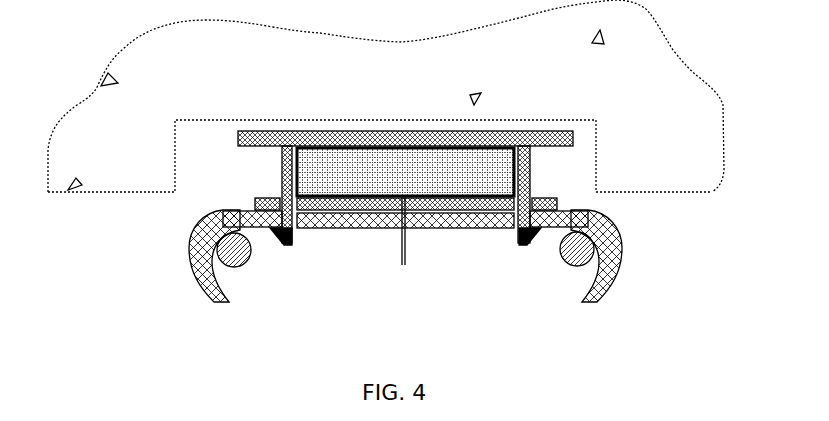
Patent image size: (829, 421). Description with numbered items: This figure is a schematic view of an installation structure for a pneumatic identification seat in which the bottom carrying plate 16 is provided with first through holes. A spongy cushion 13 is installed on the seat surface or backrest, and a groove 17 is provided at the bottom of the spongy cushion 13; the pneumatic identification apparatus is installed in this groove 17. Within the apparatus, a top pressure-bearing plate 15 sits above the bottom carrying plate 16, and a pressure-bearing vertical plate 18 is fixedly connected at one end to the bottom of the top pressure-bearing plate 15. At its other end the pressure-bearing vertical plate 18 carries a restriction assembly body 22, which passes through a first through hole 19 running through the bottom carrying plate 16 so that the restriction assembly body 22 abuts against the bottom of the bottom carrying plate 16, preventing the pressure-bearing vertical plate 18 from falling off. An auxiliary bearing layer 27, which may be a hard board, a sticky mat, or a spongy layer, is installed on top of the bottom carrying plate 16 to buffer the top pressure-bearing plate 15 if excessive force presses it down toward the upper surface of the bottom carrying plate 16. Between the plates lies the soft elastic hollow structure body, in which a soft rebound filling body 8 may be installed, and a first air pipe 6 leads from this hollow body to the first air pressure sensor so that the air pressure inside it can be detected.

The spongy cushion 13 is at (653, 83).
The groove 17 is at (190, 145).
The top pressure-bearing plate 15 is at (343, 132).
The soft rebound filling body 8 is at (410, 165).
The pressure-bearing vertical plate 18 is at (527, 190).
The first through hole 19 is at (513, 215).
The bottom carrying plate 16 is at (365, 225).
The auxiliary bearing layer 27 is at (268, 200).
The restriction assembly body 22 is at (517, 243).
The first air pipe 6 is at (400, 249).